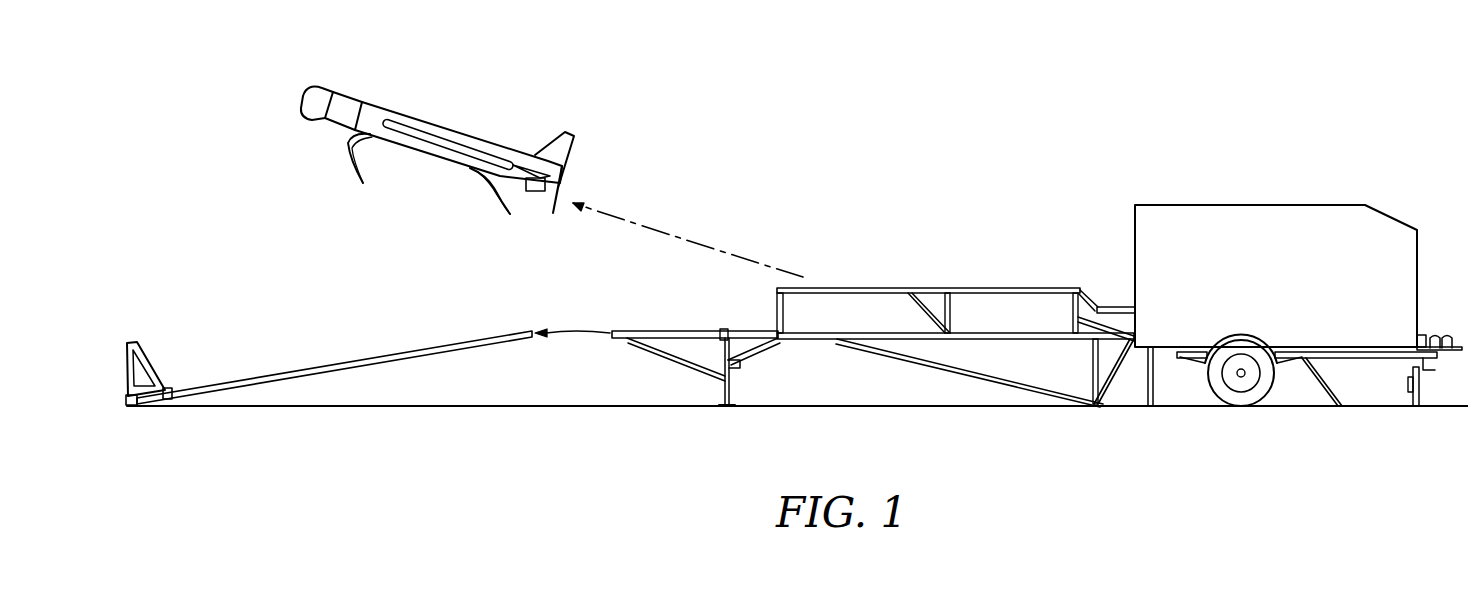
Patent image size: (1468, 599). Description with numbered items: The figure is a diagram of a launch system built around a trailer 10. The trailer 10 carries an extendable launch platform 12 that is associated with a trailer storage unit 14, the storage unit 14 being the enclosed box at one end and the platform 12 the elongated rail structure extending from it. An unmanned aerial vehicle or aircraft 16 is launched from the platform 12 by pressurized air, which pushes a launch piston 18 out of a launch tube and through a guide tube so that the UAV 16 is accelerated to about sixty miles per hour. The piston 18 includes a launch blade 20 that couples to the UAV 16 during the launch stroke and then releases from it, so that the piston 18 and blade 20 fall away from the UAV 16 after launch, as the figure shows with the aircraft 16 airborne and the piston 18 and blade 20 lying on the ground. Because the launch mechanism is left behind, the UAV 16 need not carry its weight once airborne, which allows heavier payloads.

The trailer 10 is at (1146, 92).
The extendable launch platform 12 is at (949, 276).
The trailer storage unit 14 is at (1268, 189).
The unmanned aerial vehicle 16 is at (377, 103).
The launch piston 18 is at (308, 365).
The launch blade 20 is at (140, 344).